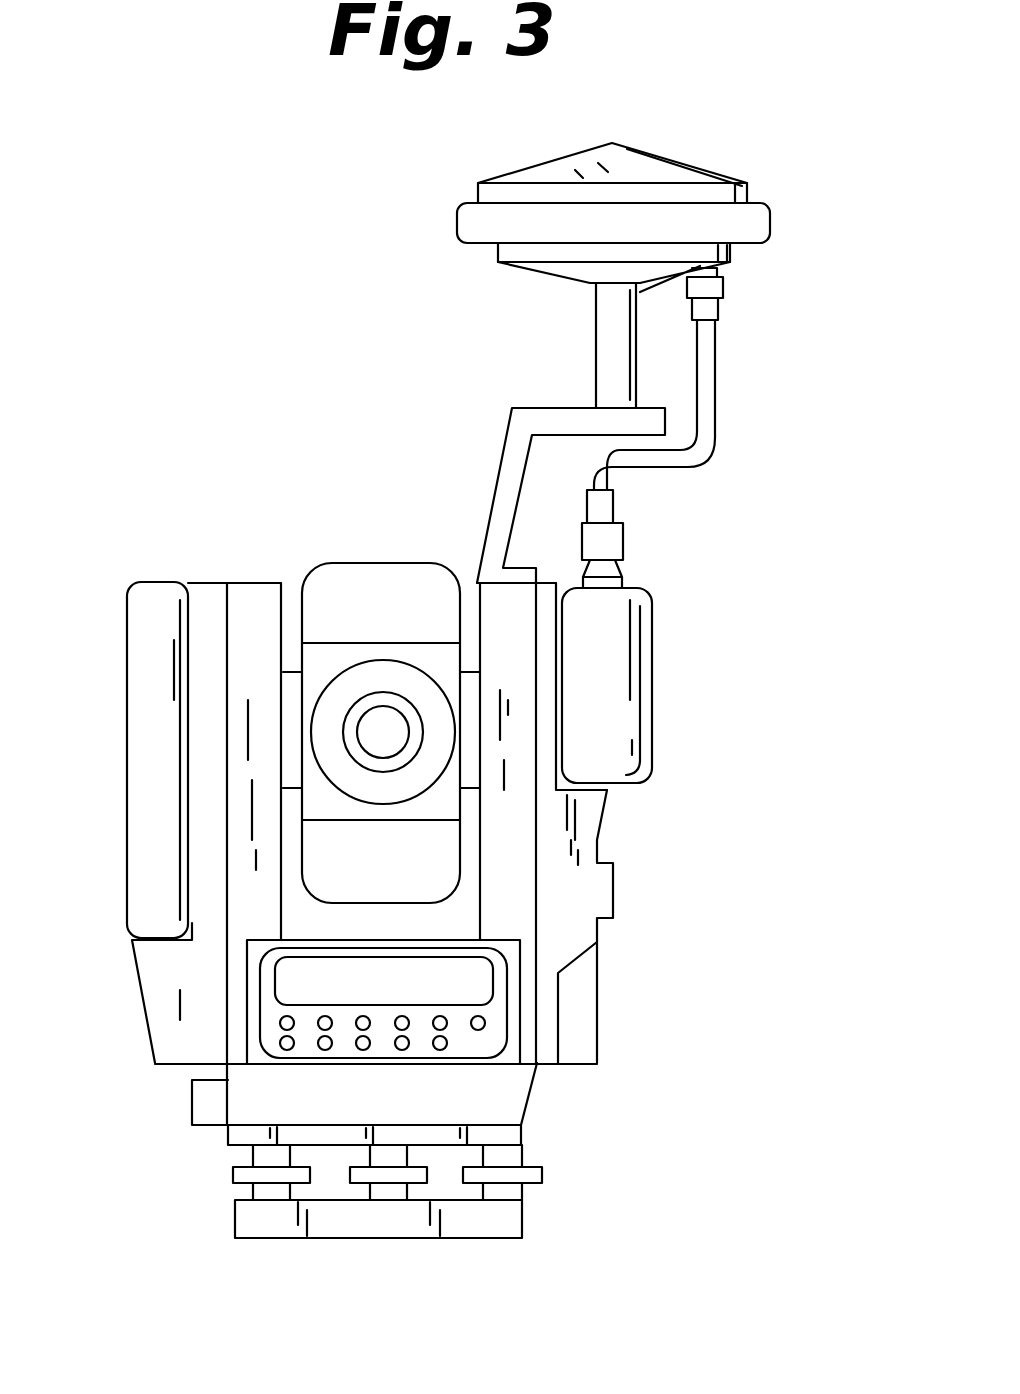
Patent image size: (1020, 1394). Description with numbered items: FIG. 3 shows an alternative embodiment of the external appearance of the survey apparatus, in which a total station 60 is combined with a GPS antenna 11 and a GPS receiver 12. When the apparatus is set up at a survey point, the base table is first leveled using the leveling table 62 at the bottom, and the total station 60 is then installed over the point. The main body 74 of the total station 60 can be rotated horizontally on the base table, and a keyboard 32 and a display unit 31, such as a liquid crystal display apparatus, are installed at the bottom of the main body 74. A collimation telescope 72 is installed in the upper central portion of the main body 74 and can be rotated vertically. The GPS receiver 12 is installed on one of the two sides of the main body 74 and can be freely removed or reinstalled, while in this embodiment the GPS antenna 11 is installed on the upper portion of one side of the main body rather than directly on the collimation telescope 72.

The GPS antenna 11 is at (770, 222).
The GPS receiver 12 is at (627, 621).
The display unit 31 is at (310, 983).
The keyboard 32 is at (272, 1033).
The total station 60 is at (300, 917).
The leveling table 62 is at (218, 1195).
The collimation telescope 72 is at (320, 653).
The main body 74 is at (585, 848).